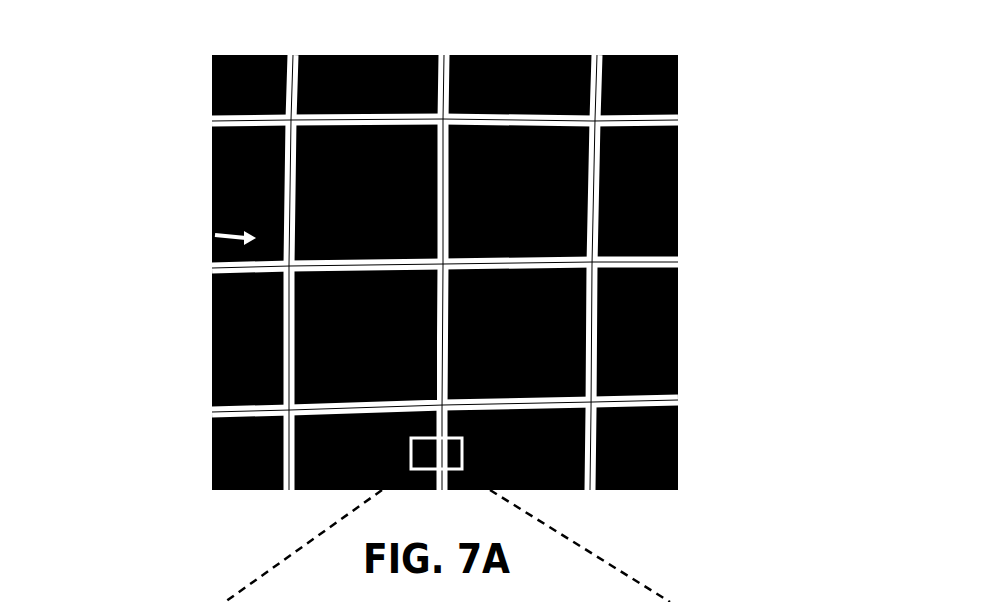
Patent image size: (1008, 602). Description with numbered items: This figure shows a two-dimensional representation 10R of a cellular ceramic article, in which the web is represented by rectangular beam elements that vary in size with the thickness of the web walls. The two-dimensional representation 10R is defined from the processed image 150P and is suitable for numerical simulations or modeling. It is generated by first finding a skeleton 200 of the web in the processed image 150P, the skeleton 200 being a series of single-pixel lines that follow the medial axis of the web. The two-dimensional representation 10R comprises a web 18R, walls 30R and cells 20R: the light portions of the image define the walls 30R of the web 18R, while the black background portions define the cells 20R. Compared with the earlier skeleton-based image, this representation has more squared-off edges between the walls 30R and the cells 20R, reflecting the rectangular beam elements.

The 2D representation 10R is at (432, 245).
The skeleton 200 is at (215, 122).
The cells 20R is at (398, 346).
The walls 30R is at (347, 257).
The web 18R is at (213, 235).
The processed image 150P is at (163, 205).